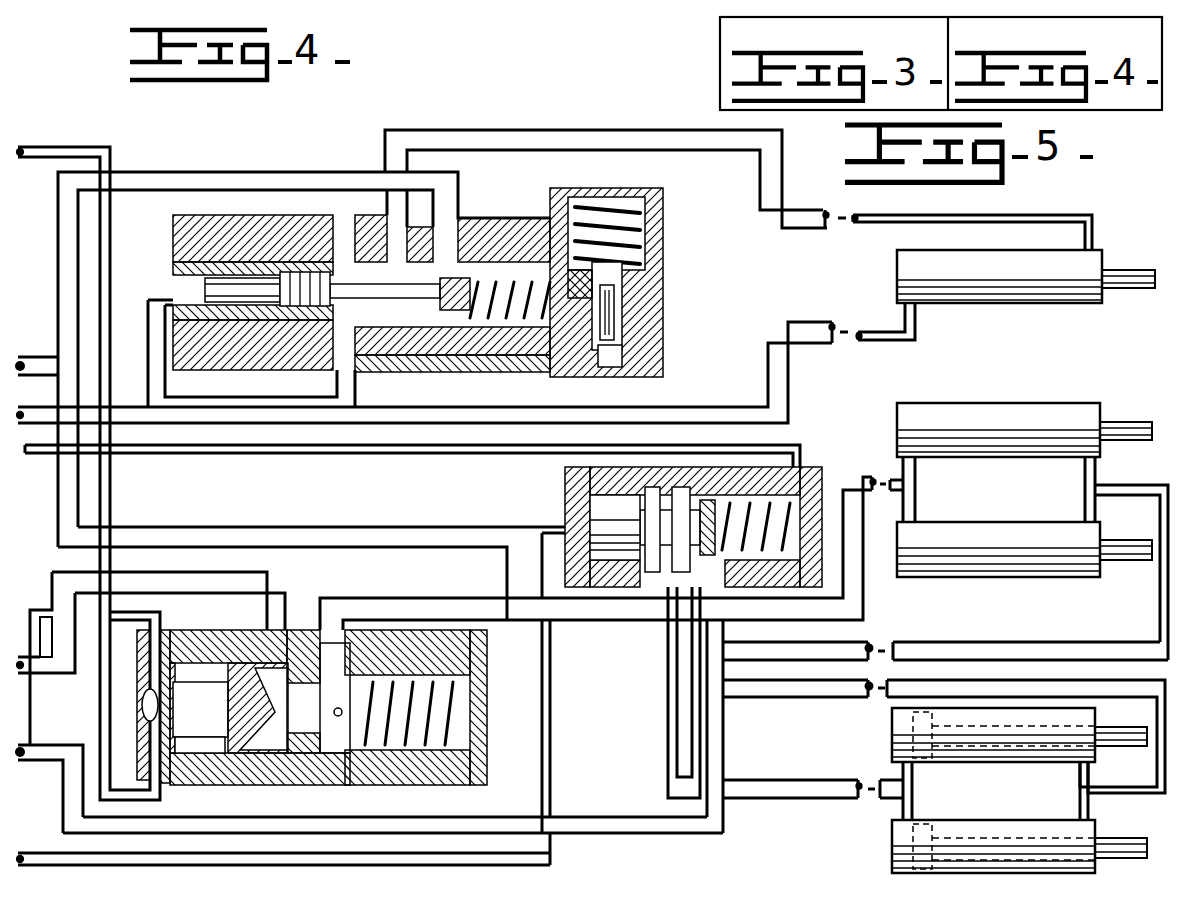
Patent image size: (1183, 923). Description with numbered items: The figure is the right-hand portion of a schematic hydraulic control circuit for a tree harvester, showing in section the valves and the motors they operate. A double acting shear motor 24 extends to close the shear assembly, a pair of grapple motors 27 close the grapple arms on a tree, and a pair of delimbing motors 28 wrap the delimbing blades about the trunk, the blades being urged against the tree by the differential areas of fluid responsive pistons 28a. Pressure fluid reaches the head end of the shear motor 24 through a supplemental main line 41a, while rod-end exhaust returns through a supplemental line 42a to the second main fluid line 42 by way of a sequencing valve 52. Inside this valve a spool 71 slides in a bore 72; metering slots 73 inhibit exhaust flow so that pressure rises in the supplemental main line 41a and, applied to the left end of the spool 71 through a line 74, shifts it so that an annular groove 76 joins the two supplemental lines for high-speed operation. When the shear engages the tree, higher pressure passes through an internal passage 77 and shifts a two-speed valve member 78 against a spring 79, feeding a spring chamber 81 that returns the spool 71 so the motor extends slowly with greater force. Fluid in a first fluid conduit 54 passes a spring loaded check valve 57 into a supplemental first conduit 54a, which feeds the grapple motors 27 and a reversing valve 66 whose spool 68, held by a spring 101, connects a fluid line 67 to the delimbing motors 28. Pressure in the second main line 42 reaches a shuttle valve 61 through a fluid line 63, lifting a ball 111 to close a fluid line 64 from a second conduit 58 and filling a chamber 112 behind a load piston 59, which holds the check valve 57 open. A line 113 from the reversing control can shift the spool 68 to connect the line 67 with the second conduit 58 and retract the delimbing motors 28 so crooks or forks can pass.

The shear motor 24 is at (898, 266).
The grapple motors 27 is at (1044, 386).
The delimbing motors 28 is at (891, 714).
The fluid responsive pistons 28a is at (920, 762).
The supplemental main line 41a is at (282, 414).
The second main fluid line 42 is at (170, 150).
The supplemental line 42a is at (655, 134).
The sequencing valve 52 is at (391, 273).
The first fluid conduit 54 is at (296, 572).
The supplemental first conduit 54a is at (488, 588).
The check valve 57 is at (382, 786).
The second conduit 58 is at (268, 713).
The load piston 59 is at (236, 670).
The shuttle valve 61 is at (122, 694).
The fluid line 63 is at (110, 226).
The fluid line 64 is at (34, 596).
The reversing valve 66 is at (441, 513).
The fluid line 67 is at (784, 760).
The spool 68 is at (586, 515).
The spool 71 is at (313, 331).
The bore 72 is at (258, 260).
The metering slots 73 is at (422, 375).
The line 74 is at (154, 286).
The annular groove 76 is at (337, 260).
The internal passage 77 is at (500, 380).
The two-speed valve member 78 is at (618, 302).
The spring 79 is at (604, 192).
The spring chamber 81 is at (545, 329).
The spring 101 is at (804, 477).
The ball 111 is at (150, 700).
The chamber 112 is at (213, 750).
The line 113 is at (552, 655).